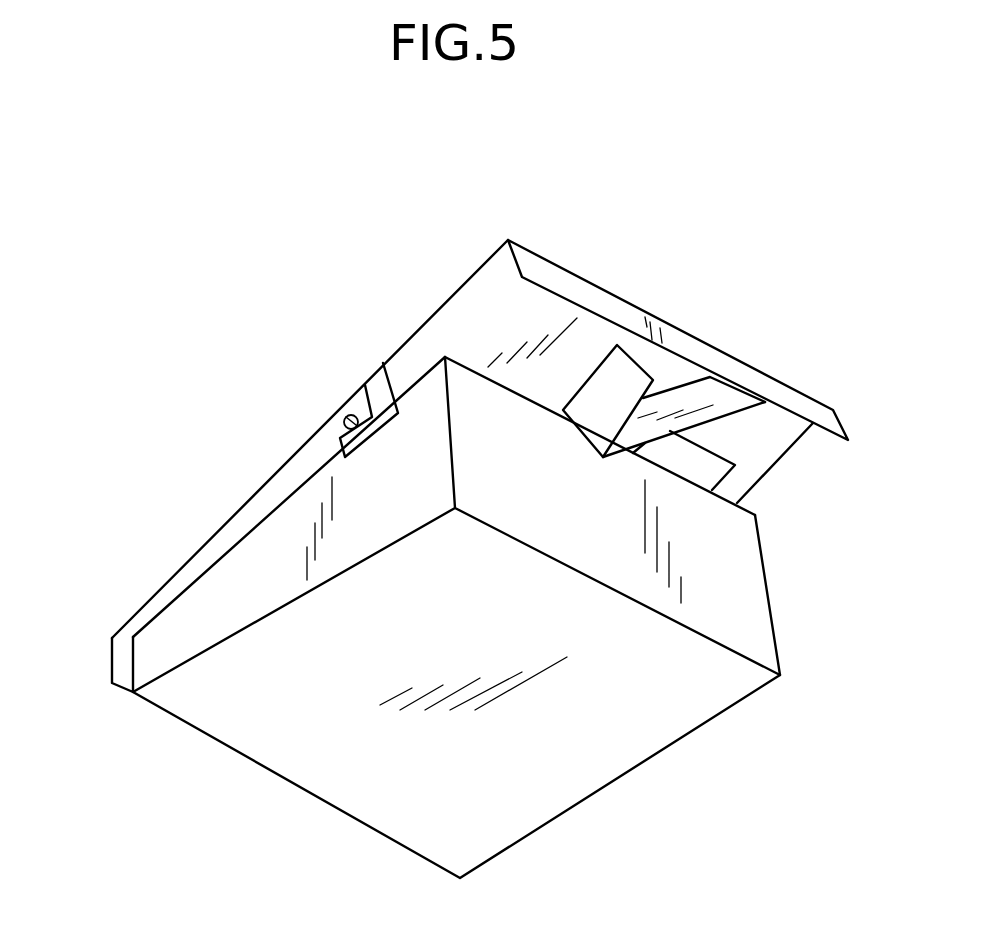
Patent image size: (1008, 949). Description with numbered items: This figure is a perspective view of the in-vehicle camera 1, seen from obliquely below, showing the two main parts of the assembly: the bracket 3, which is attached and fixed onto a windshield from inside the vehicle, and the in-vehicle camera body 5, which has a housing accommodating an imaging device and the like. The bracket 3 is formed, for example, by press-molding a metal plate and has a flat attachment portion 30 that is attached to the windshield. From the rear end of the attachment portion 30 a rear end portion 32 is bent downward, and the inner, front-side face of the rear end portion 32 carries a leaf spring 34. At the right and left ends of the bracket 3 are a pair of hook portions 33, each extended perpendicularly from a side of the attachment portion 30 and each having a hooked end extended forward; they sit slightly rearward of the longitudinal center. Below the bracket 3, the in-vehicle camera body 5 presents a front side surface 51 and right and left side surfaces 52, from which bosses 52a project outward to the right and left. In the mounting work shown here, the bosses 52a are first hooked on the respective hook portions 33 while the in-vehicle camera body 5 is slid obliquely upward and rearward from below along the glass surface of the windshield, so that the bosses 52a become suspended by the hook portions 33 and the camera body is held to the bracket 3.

The in-vehicle camera 1 is at (732, 167).
The bracket 3 is at (508, 240).
The attachment portion 30 is at (478, 296).
The rear end portion 32 is at (593, 307).
The hook portions 33 is at (368, 380).
The leaf spring 34 is at (692, 383).
The in-vehicle camera body 5 is at (781, 676).
The front side surface 51 is at (112, 664).
The side surfaces 52 is at (260, 549).
The bosses 52a is at (342, 418).